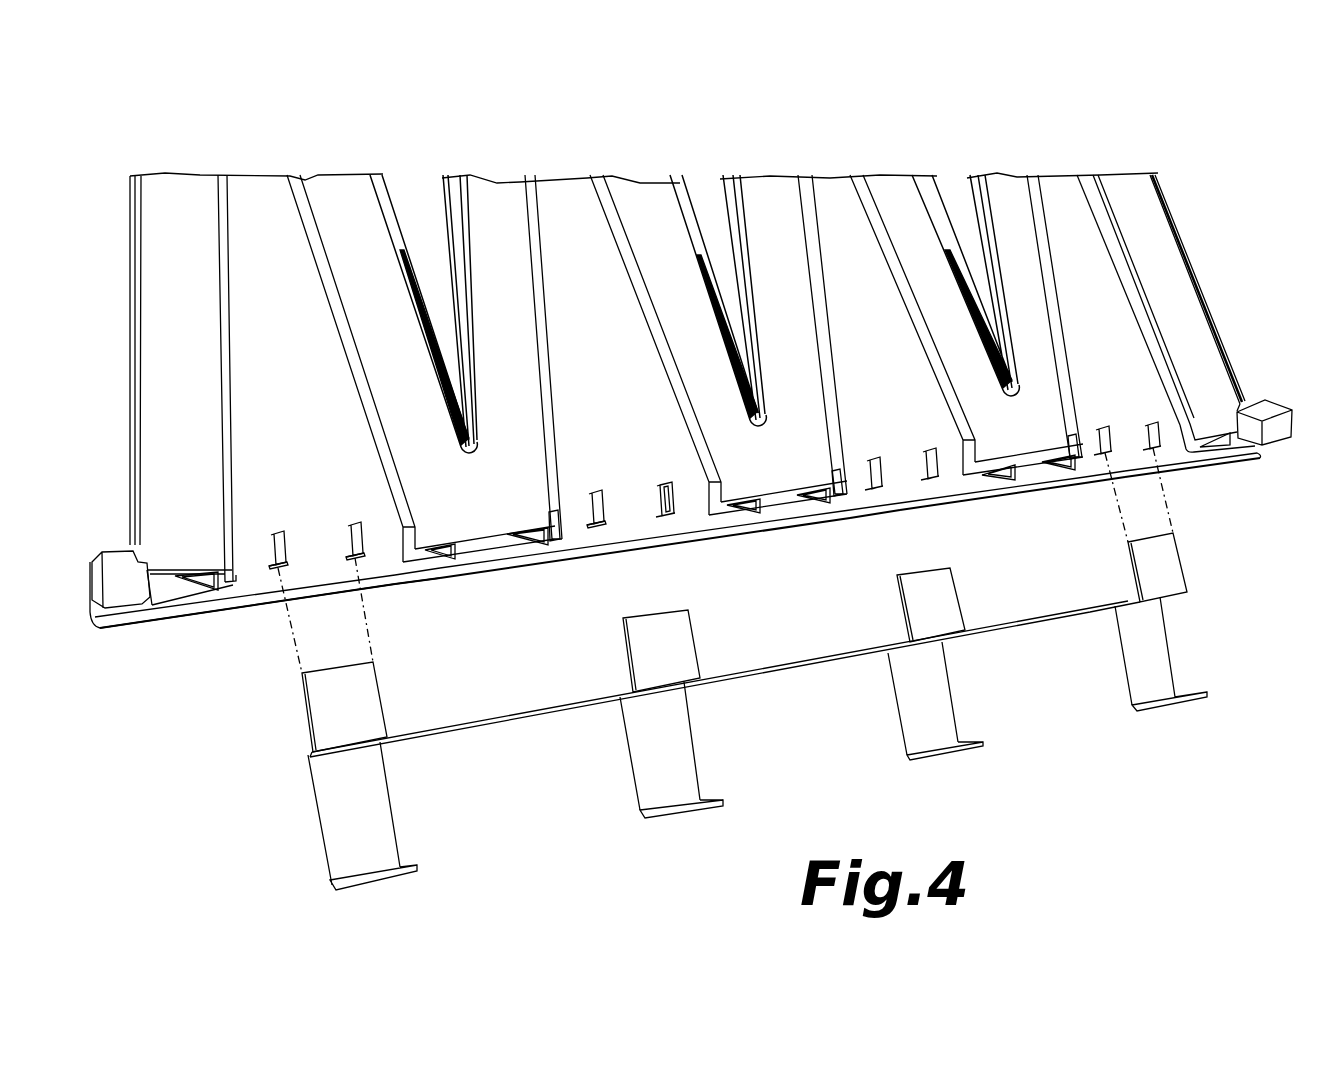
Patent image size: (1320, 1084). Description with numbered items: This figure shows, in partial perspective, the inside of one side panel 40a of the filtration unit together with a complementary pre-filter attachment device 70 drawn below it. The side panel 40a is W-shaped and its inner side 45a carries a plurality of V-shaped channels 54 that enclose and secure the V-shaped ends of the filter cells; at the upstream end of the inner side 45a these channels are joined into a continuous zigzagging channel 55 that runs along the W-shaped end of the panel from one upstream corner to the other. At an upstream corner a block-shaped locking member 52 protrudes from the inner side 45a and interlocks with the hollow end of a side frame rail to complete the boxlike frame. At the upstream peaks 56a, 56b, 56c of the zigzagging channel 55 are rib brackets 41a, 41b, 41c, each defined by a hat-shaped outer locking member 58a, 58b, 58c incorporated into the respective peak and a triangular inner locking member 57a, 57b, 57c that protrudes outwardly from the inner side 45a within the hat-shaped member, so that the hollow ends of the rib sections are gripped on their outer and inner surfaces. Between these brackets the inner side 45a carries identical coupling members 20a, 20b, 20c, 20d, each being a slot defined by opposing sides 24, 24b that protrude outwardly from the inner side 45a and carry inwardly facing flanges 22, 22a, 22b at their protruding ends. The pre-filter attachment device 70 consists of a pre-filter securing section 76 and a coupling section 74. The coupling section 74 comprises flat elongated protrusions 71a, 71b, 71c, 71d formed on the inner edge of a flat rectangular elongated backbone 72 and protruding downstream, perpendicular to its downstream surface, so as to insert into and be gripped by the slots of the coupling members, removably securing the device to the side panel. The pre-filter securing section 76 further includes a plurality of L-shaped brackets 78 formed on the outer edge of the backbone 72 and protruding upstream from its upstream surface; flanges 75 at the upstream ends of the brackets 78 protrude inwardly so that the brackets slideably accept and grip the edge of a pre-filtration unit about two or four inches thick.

The coupling member 20a is at (1118, 403).
The coupling member 20b is at (892, 435).
The coupling member 20c is at (631, 486).
The coupling member 20d is at (324, 546).
The flange 22 is at (607, 523).
The flange 22a is at (356, 573).
The flange 22b is at (288, 565).
The opposing side 24 is at (600, 528).
The opposing side 24b is at (280, 570).
The side panel 40a is at (685, 453).
The rib bracket 41a is at (1088, 456).
The rib bracket 41b is at (865, 505).
The rib bracket 41c is at (413, 563).
The inner side 45a is at (301, 370).
The locking member 52 is at (1280, 403).
The V-shaped channel 54 is at (893, 188).
The continuous zigzagging channel 55 is at (1163, 285).
The upstream peak 56a is at (1023, 461).
The upstream peak 56b is at (778, 496).
The upstream peak 56c is at (482, 535).
The triangular inner locking member 57a is at (1050, 489).
The triangular inner locking member 57b is at (797, 521).
The triangular inner locking member 57c is at (505, 558).
The hat-shaped outer locking member 58a is at (1070, 450).
The hat-shaped outer locking member 58b is at (834, 481).
The hat-shaped outer locking member 58c is at (549, 517).
The pre-filter attachment device 70 is at (742, 711).
The flat elongated protrusion 71a is at (1176, 583).
The flat elongated protrusion 71b is at (954, 619).
The flat elongated protrusion 71c is at (650, 746).
The flat elongated protrusion 71d is at (315, 776).
The flat rectangular elongated backbone 72 is at (497, 727).
The coupling section 74 is at (295, 704).
The flange 75 is at (685, 815).
The pre-filter securing section 76 is at (306, 819).
The bracket 78 is at (637, 768).